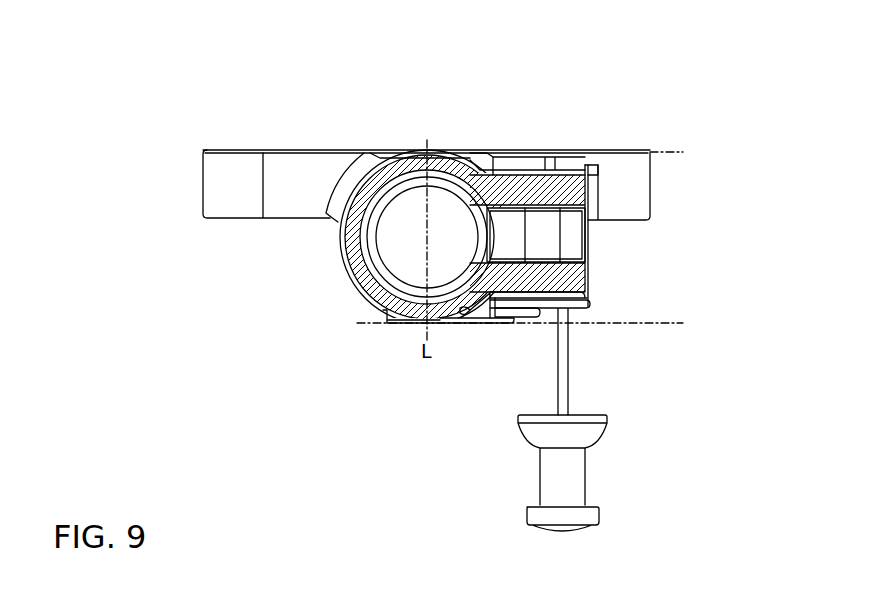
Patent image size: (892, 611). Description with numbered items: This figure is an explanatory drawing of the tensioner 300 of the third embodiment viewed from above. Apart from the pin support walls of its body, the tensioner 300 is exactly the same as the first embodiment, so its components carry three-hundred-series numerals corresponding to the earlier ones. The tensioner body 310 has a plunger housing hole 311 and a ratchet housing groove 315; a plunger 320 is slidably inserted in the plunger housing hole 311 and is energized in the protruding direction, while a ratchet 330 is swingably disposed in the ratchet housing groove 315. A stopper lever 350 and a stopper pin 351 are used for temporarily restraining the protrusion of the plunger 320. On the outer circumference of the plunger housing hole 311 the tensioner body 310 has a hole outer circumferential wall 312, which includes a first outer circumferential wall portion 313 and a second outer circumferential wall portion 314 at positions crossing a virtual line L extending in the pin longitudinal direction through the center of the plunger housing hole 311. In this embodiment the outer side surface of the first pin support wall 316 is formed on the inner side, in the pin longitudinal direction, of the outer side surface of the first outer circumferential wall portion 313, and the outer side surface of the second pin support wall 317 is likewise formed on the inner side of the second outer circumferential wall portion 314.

The tensioner 300 is at (174, 84).
The tensioner body 310 is at (285, 188).
The plunger housing hole 311 is at (400, 237).
The hole outer circumferential wall 312 is at (360, 168).
The first outer circumferential wall portion 313 is at (428, 150).
The second outer circumferential wall portion 314 is at (410, 324).
The ratchet housing groove 315 is at (568, 237).
The first pin support wall 316 is at (530, 170).
The second pin support wall 317 is at (510, 322).
The plunger 320 is at (369, 257).
The ratchet 330 is at (608, 236).
The stopper lever 350 is at (590, 306).
The stopper pin 351 is at (568, 472).